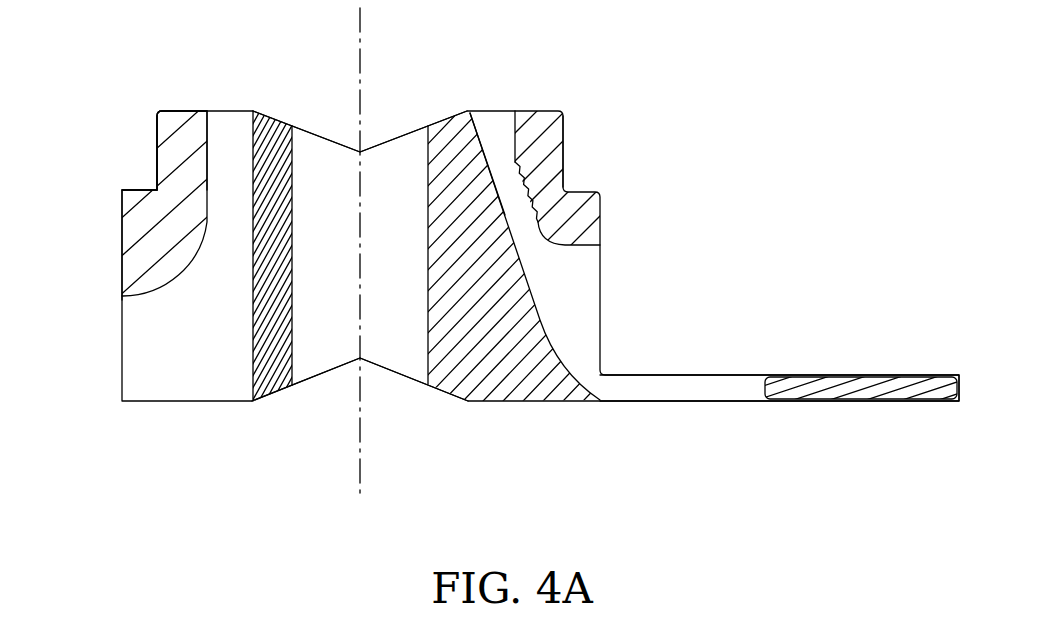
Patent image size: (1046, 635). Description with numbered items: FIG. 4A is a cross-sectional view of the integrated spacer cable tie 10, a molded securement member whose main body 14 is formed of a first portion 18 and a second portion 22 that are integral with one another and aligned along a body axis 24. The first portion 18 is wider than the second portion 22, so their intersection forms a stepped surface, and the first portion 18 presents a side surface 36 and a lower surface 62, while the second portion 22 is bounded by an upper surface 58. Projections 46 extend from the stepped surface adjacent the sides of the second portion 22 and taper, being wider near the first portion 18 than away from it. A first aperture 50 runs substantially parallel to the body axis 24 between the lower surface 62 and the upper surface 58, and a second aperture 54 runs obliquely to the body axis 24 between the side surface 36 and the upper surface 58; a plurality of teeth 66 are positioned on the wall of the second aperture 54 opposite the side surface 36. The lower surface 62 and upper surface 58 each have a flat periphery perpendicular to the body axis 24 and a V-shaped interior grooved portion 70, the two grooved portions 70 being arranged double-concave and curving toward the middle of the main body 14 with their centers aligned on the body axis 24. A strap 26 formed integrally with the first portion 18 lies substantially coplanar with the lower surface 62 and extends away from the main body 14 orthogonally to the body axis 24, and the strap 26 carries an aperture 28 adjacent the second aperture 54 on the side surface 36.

The integrated spacer cable tie 10 is at (767, 37).
The main body 14 is at (93, 90).
The first portion 18 is at (100, 250).
The second portion 22 is at (145, 176).
The body axis 24 is at (362, 22).
The strap 26 is at (873, 361).
The aperture 28 is at (677, 361).
The side surface 36 is at (600, 218).
The projections 46 is at (157, 145).
The first aperture 50 is at (228, 96).
The second aperture 54 is at (490, 111).
The upper surface 58 is at (185, 110).
The lower surface 62 is at (518, 401).
The teeth 66 is at (550, 200).
The grooved portion 70 is at (319, 96).